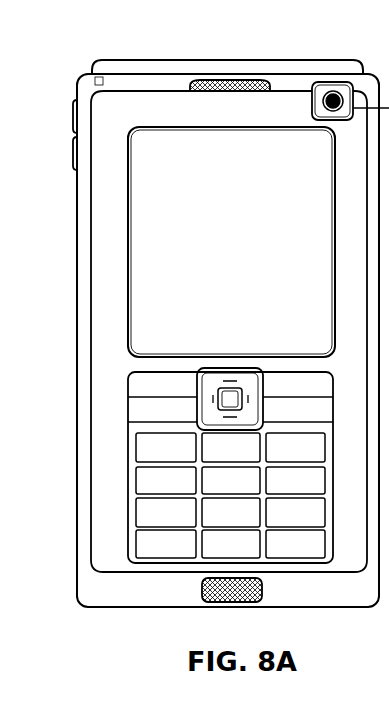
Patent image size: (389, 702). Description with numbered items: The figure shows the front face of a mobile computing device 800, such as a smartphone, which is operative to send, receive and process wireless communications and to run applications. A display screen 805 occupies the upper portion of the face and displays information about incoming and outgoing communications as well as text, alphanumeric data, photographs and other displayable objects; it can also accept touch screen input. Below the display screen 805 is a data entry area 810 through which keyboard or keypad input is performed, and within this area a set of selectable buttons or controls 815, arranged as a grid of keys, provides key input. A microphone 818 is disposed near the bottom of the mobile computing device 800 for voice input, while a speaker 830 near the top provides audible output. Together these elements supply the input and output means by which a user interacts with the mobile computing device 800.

The mobile computing device 800 is at (77, 76).
The display screen 805 is at (153, 230).
The data entry area 810 is at (128, 405).
The selectable buttons or controls 815 is at (146, 480).
The microphone 818 is at (202, 588).
The speaker 830 is at (264, 82).